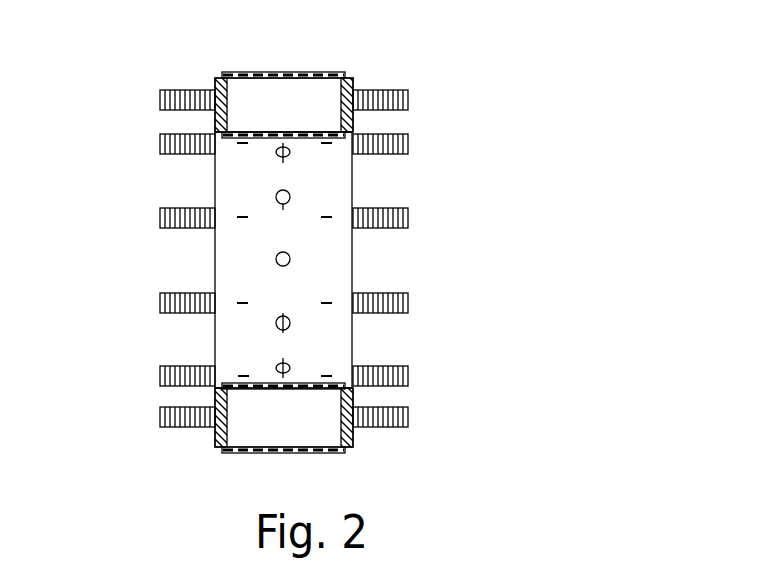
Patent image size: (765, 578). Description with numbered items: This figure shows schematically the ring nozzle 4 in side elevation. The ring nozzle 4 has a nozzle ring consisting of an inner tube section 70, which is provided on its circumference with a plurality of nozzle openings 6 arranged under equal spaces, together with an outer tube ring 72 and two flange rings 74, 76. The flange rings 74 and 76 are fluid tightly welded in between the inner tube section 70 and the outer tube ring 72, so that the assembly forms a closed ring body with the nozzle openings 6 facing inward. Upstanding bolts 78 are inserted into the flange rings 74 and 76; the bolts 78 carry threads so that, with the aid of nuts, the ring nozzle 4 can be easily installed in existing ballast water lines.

The ring nozzle 4 is at (242, 258).
The nozzle opening 6 is at (290, 196).
The inner tube section 70 is at (298, 131).
The outer tube ring 72 is at (323, 71).
The flange ring 74 is at (215, 92).
The flange ring 76 is at (354, 90).
The upstanding bolt 78 is at (162, 218).